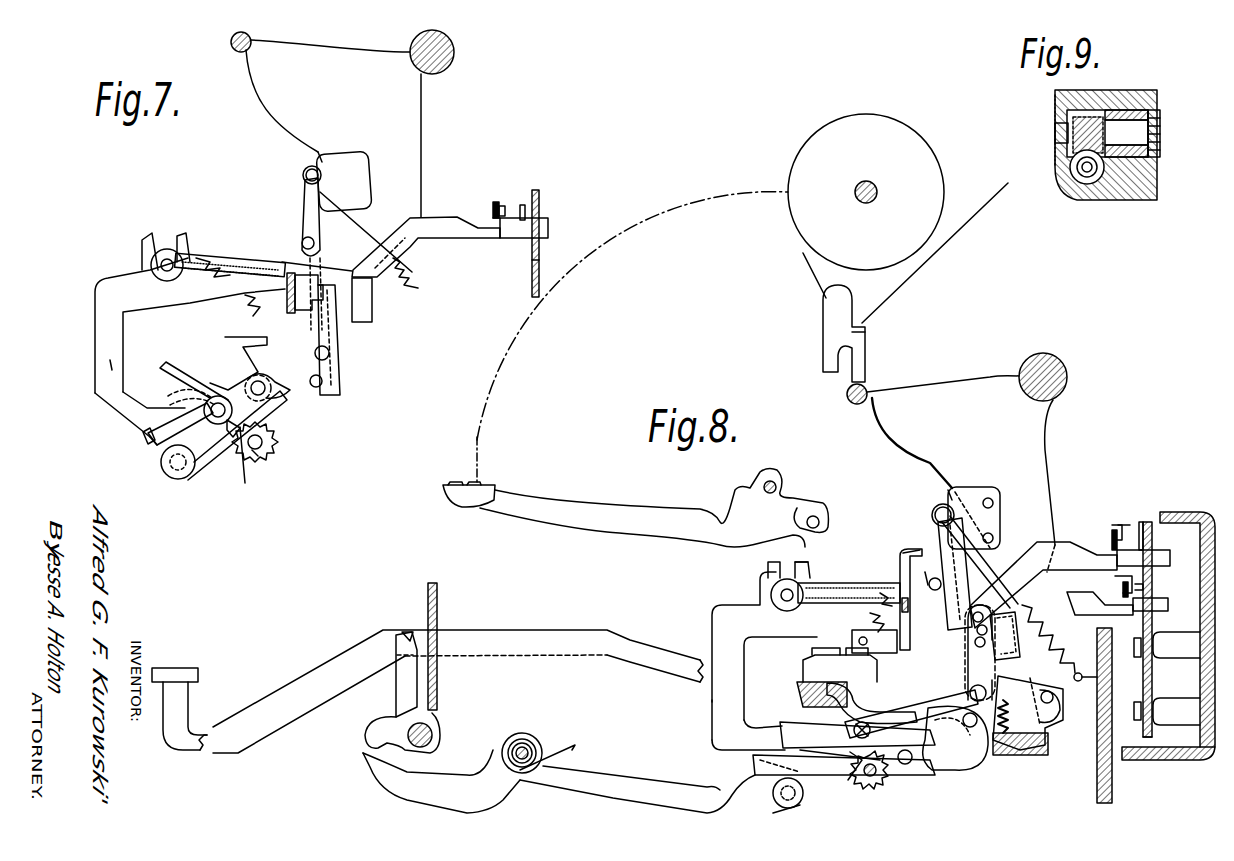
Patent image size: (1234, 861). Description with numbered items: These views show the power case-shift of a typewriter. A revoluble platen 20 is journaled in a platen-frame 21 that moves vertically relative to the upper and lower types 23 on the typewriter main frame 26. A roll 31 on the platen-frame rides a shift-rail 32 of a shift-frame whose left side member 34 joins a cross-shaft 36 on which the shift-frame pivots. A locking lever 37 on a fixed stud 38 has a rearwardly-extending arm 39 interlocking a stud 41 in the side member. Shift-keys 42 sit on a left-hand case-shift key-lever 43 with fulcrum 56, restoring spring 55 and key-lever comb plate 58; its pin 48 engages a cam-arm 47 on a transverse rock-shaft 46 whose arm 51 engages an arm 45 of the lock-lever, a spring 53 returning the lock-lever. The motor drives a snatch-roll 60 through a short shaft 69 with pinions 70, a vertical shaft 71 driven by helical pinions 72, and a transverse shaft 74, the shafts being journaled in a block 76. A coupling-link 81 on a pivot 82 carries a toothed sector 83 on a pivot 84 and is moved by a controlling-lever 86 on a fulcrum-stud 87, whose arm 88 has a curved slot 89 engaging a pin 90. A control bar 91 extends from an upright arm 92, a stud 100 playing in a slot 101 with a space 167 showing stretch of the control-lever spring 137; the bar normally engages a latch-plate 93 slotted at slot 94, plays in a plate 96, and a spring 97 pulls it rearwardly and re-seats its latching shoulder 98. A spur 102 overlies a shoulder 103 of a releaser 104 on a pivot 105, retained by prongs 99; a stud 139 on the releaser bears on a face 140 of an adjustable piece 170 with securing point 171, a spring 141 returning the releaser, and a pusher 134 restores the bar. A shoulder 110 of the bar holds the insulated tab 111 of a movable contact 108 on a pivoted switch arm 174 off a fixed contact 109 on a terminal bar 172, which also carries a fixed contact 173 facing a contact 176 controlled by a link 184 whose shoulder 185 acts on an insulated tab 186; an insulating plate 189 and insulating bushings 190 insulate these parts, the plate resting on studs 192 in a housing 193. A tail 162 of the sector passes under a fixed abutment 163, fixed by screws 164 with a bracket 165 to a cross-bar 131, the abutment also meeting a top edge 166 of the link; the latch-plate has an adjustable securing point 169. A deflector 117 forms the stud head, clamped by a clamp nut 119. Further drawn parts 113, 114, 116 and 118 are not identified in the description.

In FIG. 8, the platen 20 is at (795, 160).
In FIG. 8, the platen-frame 21 is at (935, 258).
In FIG. 8, the typewriter types 23 is at (470, 483).
In FIG. 8, the typewriter main frame 26 is at (1097, 785).
In FIG. 8, the roll 31 is at (866, 343).
In FIG. 7, the shift-rail 32 is at (231, 42).
In FIG. 8, the shift-rail 32 is at (846, 393).
In FIG. 7, the left side member 34 is at (272, 112).
In FIG. 8, the left side member 34 is at (990, 375).
In FIG. 7, the cross-shaft 36 is at (455, 50).
In FIG. 8, the cross-shaft 36 is at (1068, 372).
In FIG. 8, the locking lever 37 is at (545, 738).
In FIG. 8, the fixed stud 38 is at (523, 745).
In FIG. 8, the rearwardly-extending arm 39 is at (655, 775).
In FIG. 7, the stud 41 is at (323, 381).
In FIG. 8, the stud 41 is at (955, 738).
In FIG. 8, the shift-keys 42 is at (200, 675).
In FIG. 8, the left-hand case-shift key-lever 43 is at (325, 665).
In FIG. 8, the arm of lock-lever 45 is at (368, 788).
In FIG. 8, the transverse rock-shaft 46 is at (434, 731).
In FIG. 8, the cam-arm 47 is at (396, 690).
In FIG. 8, the pin 48 is at (408, 630).
In FIG. 8, the arm 51 is at (365, 737).
In FIG. 8, the spring 53 is at (558, 760).
In FIG. 8, the restoring spring 55 is at (1012, 755).
In FIG. 8, the fulcrum 56 is at (1055, 699).
In FIG. 8, the key-lever comb plate 58 is at (440, 600).
In FIG. 7, the snatch-roll 60 is at (276, 445).
In FIG. 8, the snatch-roll 60 is at (886, 777).
In FIG. 9, the short shaft 69 is at (1122, 110).
In FIG. 9, the pinions 70 is at (1162, 135).
In FIG. 9, the vertical shaft 71 is at (1090, 180).
In FIG. 9, the helical pinions 72 is at (1065, 117).
In FIG. 7, the transverse shaft 74 is at (258, 456).
In FIG. 9, the block 76 is at (1140, 202).
In FIG. 8, the coupling-link 81 is at (966, 685).
In FIG. 7, the pivot 82 is at (330, 353).
In FIG. 7, the toothed sector 83 is at (236, 437).
In FIG. 8, the toothed sector 83 is at (854, 782).
In FIG. 7, the pivot 84 is at (214, 398).
In FIG. 8, the pivot 84 is at (918, 706).
In FIG. 7, the coupling-link controlling-lever 86 is at (94, 375).
In FIG. 8, the coupling-link controlling-lever 86 is at (708, 700).
In FIG. 7, the fulcrum-stud 87 is at (172, 480).
In FIG. 7, the arm 88 is at (205, 468).
In FIG. 7, the slot 89 is at (268, 400).
In FIG. 7, the pin 90 is at (292, 400).
In FIG. 7, the coupling-link control bar 91 is at (406, 216).
In FIG. 8, the coupling-link control bar 91 is at (1060, 540).
In FIG. 7, the upright arm 92 is at (92, 330).
In FIG. 8, the upright arm 92 is at (710, 625).
In FIG. 7, the latch-plate 93 is at (287, 305).
In FIG. 8, the latch-plate 93 is at (900, 590).
In FIG. 8, the slot 94 is at (900, 570).
In FIG. 7, the plate 96 is at (533, 262).
In FIG. 8, the plate 96 is at (1162, 514).
In FIG. 7, the spring 97 is at (245, 298).
In FIG. 8, the spring 97 is at (884, 620).
In FIG. 7, the latching shoulder 98 is at (262, 252).
In FIG. 8, the latching shoulder 98 is at (894, 594).
In FIG. 8, the prongs 99 is at (904, 552).
In FIG. 7, the stud 100 is at (150, 265).
In FIG. 8, the stud 100 is at (780, 594).
In FIG. 7, the slot 101 is at (142, 245).
In FIG. 8, the slot 101 is at (775, 570).
In FIG. 7, the spur 102 is at (334, 316).
In FIG. 8, the spur 102 is at (950, 574).
In FIG. 7, the shoulder 103 is at (300, 311).
In FIG. 8, the shoulder 103 is at (990, 632).
In FIG. 7, the releaser 104 is at (305, 215).
In FIG. 8, the releaser 104 is at (1000, 535).
In FIG. 8, the pivot 105 is at (912, 764).
In FIG. 7, the movable contact 108 is at (499, 202).
In FIG. 8, the movable contact 108 is at (1128, 525).
In FIG. 7, the fixed contact 109 is at (523, 205).
In FIG. 8, the fixed contact 109 is at (1142, 522).
In FIG. 7, the shoulder 110 is at (503, 240).
In FIG. 8, the shoulder 110 is at (1178, 550).
In FIG. 7, the insulated tab 111 is at (492, 217).
In FIG. 8, the insulated tab 111 is at (1112, 545).
In FIG. 7, the pin 113 is at (305, 255).
In FIG. 8, the pin 113 is at (926, 572).
In FIG. 7, the pin 114 is at (314, 244).
In FIG. 7, the bar 116 is at (150, 433).
In FIG. 8, the bar 116 is at (812, 752).
In FIG. 7, the deflector 117 is at (157, 443).
In FIG. 8, the deflector 117 is at (765, 772).
In FIG. 7, the spring 118 is at (242, 466).
In FIG. 8, the clamp nut 119 is at (776, 796).
In FIG. 8, the cross-bar 131 is at (797, 694).
In FIG. 7, the pusher 134 is at (373, 306).
In FIG. 8, the pusher 134 is at (1020, 640).
In FIG. 7, the control-lever spring 137 is at (200, 256).
In FIG. 8, the control-lever spring 137 is at (878, 590).
In FIG. 7, the stud 139 is at (303, 176).
In FIG. 8, the stud 139 is at (933, 512).
In FIG. 7, the face 140 is at (325, 160).
In FIG. 8, the face 140 is at (950, 490).
In FIG. 7, the spring 141 is at (420, 283).
In FIG. 8, the spring 141 is at (1050, 612).
In FIG. 7, the tail 162 is at (180, 396).
In FIG. 7, the fixed abutment 163 is at (232, 375).
In FIG. 8, the fixed abutment 163 is at (828, 714).
In FIG. 8, the screws 164 is at (802, 668).
In FIG. 8, the bracket 165 is at (846, 650).
In FIG. 7, the top edge 166 is at (168, 406).
In FIG. 8, the top edge 166 is at (790, 735).
In FIG. 8, the space 167 is at (815, 555).
In FIG. 8, the adjustable securing point 169 is at (852, 638).
In FIG. 7, the piece 170 is at (372, 170).
In FIG. 8, the piece 170 is at (972, 488).
In FIG. 8, the adjustable securing point 171 is at (996, 505).
In FIG. 7, the terminal bar 172 is at (541, 192).
In FIG. 8, the terminal bar 172 is at (1143, 702).
In FIG. 8, the fixed contact 173 is at (1150, 588).
In FIG. 7, the pivoted switch arm 174 is at (496, 203).
In FIG. 8, the pivoted switch arm 174 is at (1118, 525).
In FIG. 8, the contact 176 is at (1136, 648).
In FIG. 8, the link 184 is at (1168, 608).
In FIG. 8, the shoulder 185 is at (1100, 615).
In FIG. 8, the insulated tab 186 is at (1118, 587).
In FIG. 8, the insulating plate 189 is at (1148, 740).
In FIG. 8, the insulating bushings 190 is at (1137, 720).
In FIG. 8, the studs 192 is at (1170, 662).
In FIG. 8, the housing 193 is at (1192, 760).